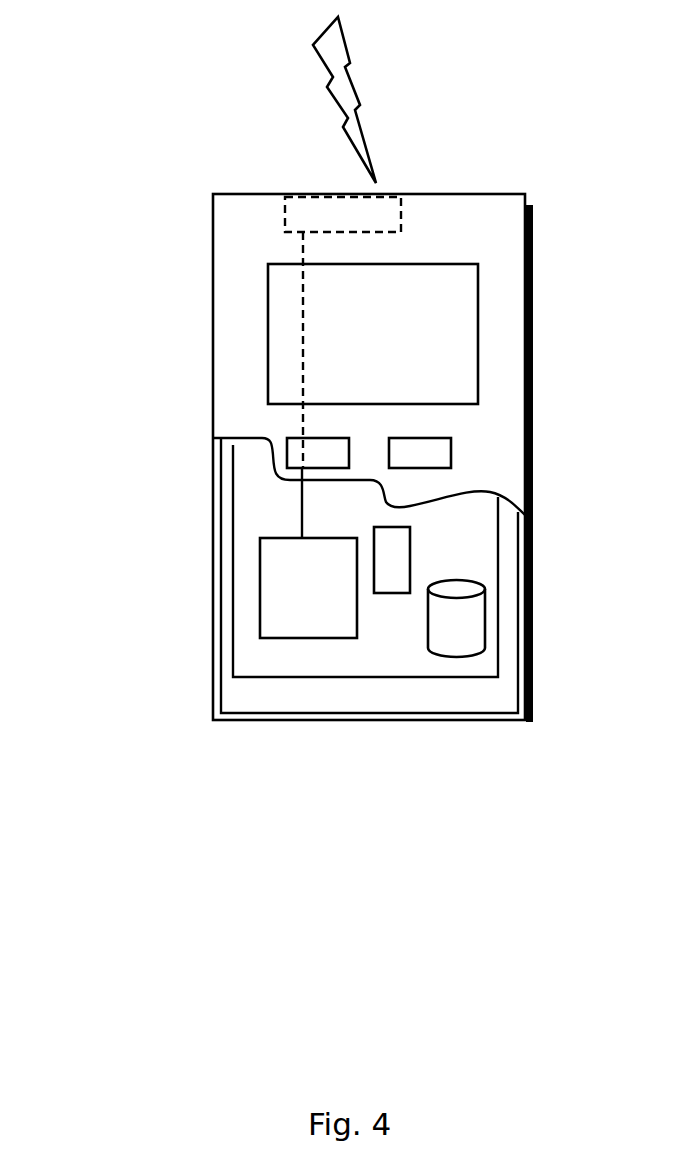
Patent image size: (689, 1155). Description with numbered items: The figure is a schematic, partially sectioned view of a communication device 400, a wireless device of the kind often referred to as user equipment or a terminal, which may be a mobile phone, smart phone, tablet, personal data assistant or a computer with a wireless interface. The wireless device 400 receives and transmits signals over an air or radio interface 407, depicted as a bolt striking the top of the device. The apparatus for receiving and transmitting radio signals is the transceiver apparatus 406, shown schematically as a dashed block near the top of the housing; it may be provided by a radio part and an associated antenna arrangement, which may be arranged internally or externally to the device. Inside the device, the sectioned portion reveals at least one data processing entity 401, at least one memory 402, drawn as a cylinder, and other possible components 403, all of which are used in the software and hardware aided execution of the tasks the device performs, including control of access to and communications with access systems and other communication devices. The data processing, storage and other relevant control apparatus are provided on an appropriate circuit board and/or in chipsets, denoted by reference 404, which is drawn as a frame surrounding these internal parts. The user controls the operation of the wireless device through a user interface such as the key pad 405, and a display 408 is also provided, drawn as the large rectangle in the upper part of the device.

The communication device 400 is at (216, 237).
The data processing entity 401 is at (268, 572).
The memory 402 is at (450, 630).
The other possible components 403 is at (393, 545).
The circuit board 404 is at (260, 658).
The key pad 405 is at (292, 455).
The transceiver apparatus 406 is at (390, 208).
The air or radio interface 407 is at (375, 124).
The display 408 is at (283, 320).